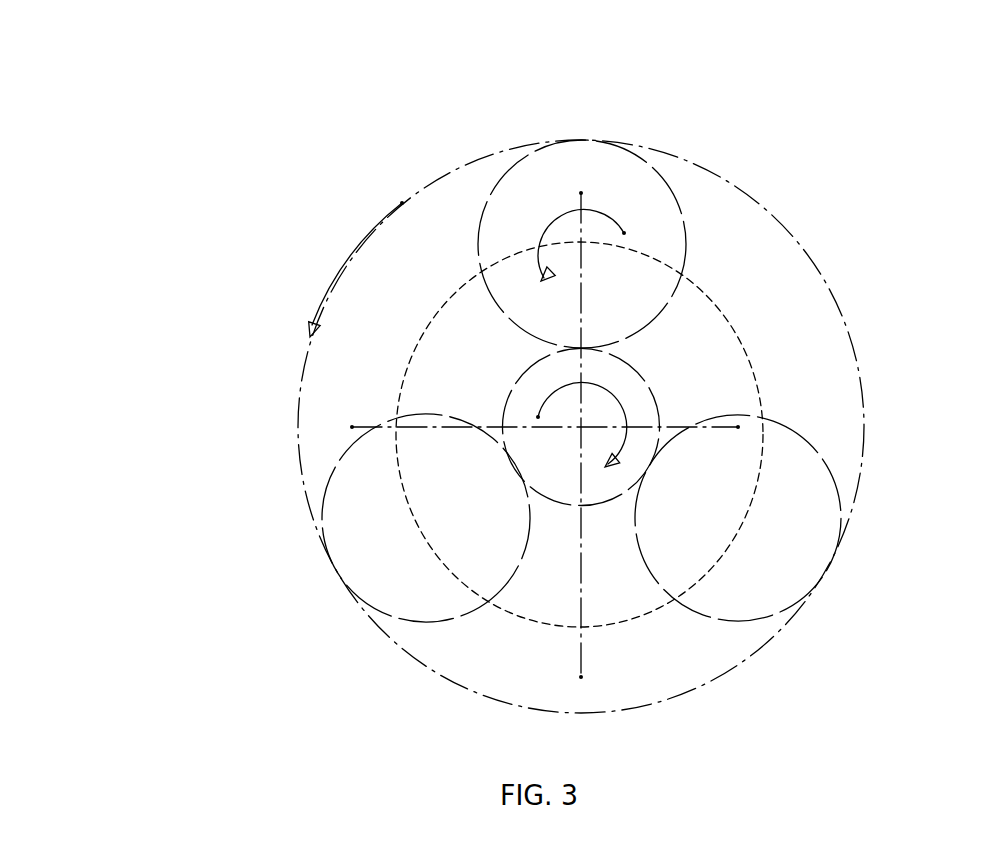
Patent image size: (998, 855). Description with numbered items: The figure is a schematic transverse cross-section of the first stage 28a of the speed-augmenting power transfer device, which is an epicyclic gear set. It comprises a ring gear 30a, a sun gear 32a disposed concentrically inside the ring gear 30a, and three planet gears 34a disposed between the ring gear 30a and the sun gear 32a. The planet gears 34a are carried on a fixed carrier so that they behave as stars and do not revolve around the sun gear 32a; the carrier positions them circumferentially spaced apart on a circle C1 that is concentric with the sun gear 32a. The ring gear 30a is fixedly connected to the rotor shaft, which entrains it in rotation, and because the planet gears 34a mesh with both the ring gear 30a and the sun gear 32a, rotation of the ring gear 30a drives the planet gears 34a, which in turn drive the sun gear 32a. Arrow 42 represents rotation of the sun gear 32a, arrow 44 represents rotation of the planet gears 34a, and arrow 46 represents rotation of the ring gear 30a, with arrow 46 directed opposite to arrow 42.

The first stage 28a is at (303, 157).
The ring gear 30a is at (723, 177).
The sun gear 32a is at (664, 405).
The circle C1 is at (758, 380).
The planet gears 34a is at (480, 218).
The arrow 42 is at (558, 388).
The arrow 44 is at (545, 222).
The arrow 46 is at (338, 270).